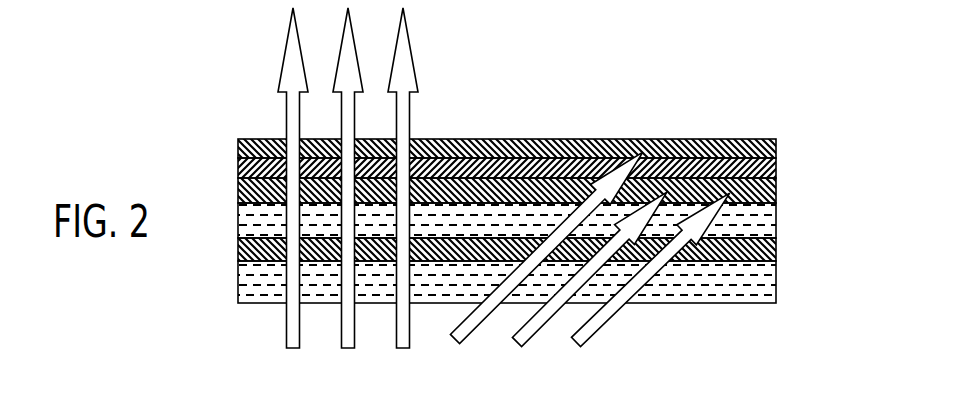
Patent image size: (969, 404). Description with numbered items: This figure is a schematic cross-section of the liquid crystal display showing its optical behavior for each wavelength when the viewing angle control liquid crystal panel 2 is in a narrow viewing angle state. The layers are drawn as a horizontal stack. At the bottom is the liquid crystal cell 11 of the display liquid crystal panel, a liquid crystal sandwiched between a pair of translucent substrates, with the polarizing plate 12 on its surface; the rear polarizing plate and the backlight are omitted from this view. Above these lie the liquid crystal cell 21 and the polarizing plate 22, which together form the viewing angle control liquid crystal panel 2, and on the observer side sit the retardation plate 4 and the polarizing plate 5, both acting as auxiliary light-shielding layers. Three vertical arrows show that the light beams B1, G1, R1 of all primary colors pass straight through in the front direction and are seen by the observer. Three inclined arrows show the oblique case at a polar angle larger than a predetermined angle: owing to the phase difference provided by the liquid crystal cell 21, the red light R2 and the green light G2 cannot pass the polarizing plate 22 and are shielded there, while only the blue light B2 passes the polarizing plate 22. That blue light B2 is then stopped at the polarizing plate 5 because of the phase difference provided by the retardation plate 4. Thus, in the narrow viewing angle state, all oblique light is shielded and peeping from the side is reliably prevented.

The viewing angle control liquid crystal panel 2 is at (579, 205).
The retardation plate 4 is at (776, 166).
The polarizing plate 5 is at (776, 146).
The liquid crystal cell 11 is at (776, 278).
The polarizing plate 12 is at (776, 248).
The liquid crystal cell 21 is at (776, 212).
The polarizing plate 22 is at (776, 183).
The light beam of B wavelength component in front direction B1 is at (287, 350).
The light beam of G wavelength component in front direction G1 is at (342, 350).
The light beam of R wavelength component in front direction R1 is at (397, 350).
The light beam of B wavelength component in oblique direction B2 is at (450, 336).
The light beam of G wavelength component in oblique direction G2 is at (513, 339).
The light beam of R wavelength component in oblique direction R2 is at (572, 339).